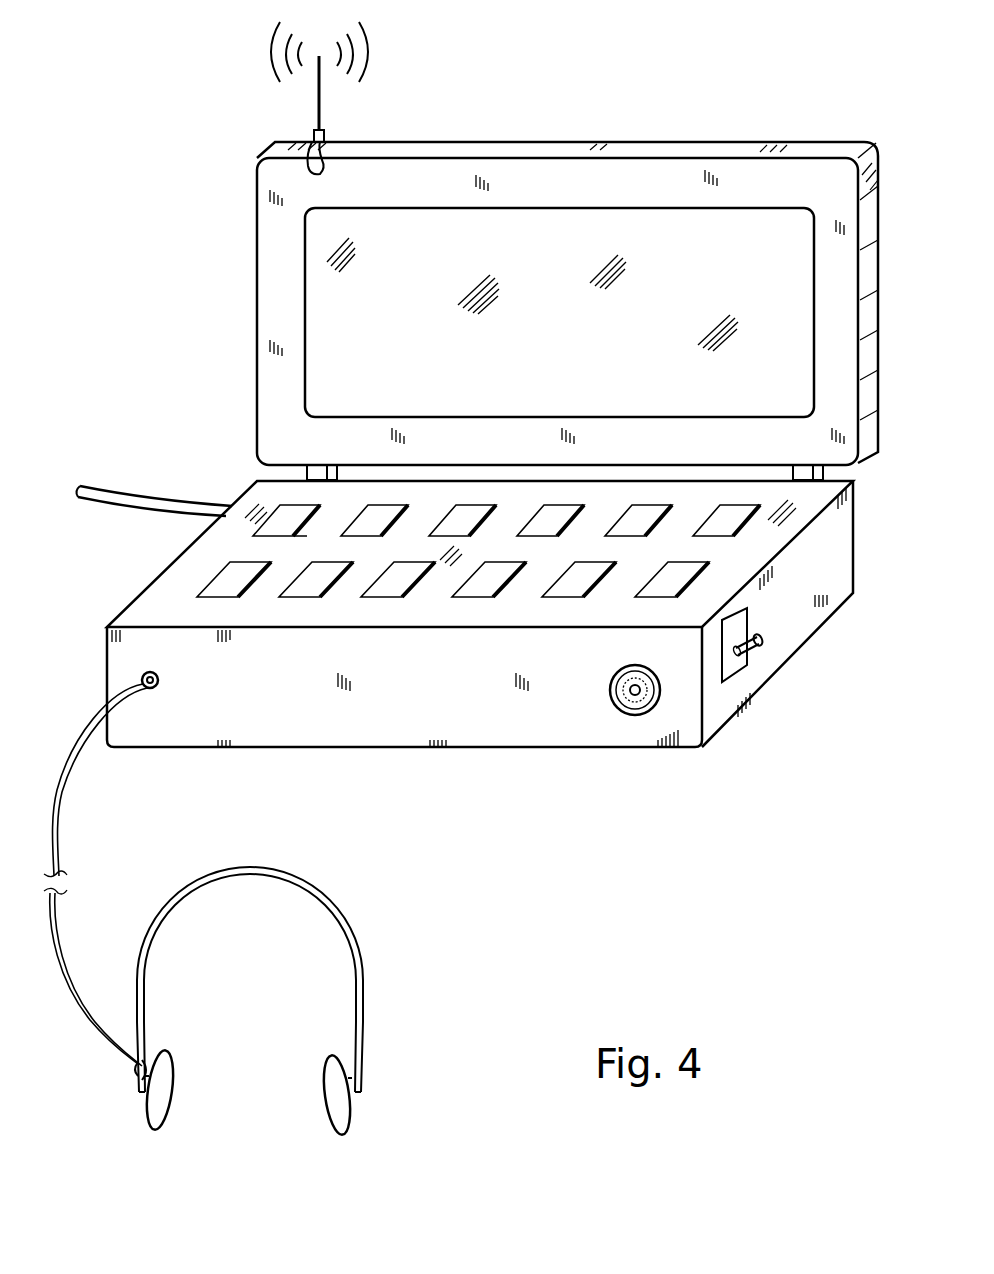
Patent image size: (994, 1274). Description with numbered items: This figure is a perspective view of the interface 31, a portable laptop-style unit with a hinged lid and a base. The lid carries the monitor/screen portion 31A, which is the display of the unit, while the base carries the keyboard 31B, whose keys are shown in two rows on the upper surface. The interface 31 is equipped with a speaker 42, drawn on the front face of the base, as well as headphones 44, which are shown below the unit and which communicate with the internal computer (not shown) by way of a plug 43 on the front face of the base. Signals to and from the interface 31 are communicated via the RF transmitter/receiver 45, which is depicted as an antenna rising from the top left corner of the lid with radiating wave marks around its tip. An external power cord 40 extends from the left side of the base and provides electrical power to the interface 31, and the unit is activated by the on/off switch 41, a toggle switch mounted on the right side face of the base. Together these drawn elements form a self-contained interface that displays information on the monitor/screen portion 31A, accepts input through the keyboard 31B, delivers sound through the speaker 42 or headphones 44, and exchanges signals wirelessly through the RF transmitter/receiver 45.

The interface 31 is at (680, 118).
The monitor/screen portion 31A is at (320, 287).
The keyboard 31B is at (190, 571).
The external power cord 40 is at (122, 497).
The on/off switch 41 is at (750, 660).
The speaker 42 is at (632, 713).
The plug 43 is at (160, 700).
The headphones 44 is at (362, 955).
The RF transmitter/receiver 45 is at (283, 97).